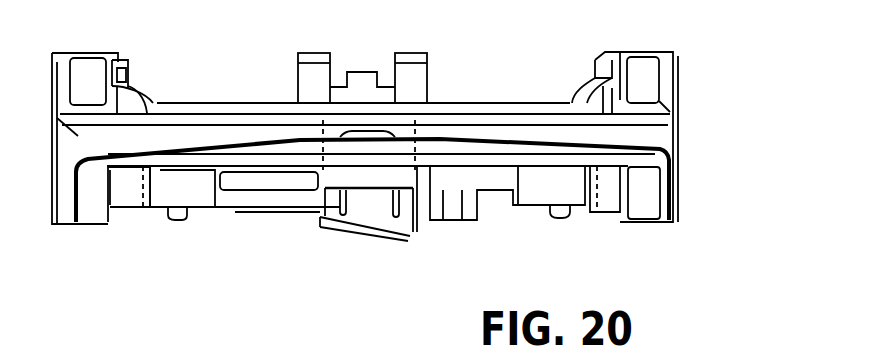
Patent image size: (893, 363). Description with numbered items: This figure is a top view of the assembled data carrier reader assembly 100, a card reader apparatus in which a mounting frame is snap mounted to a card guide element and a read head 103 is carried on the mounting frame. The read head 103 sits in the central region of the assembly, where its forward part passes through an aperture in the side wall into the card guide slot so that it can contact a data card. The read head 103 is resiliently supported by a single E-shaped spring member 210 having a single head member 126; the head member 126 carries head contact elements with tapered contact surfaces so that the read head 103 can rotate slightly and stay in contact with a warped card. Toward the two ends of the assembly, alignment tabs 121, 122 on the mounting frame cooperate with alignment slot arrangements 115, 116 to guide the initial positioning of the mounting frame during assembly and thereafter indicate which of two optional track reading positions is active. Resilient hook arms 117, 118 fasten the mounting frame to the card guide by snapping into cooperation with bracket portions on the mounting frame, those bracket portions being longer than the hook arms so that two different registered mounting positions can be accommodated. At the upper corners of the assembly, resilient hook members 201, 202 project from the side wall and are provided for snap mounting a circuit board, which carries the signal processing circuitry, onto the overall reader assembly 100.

The data carrier reader assembly 100 is at (522, 47).
The resilient hook member 201 is at (128, 62).
The resilient hook member 202 is at (608, 52).
The alignment slot arrangement 116 is at (127, 202).
The alignment tab 122 is at (147, 212).
The resilient hook arm 118 is at (183, 217).
The spring member 210 is at (227, 207).
The read head 103 is at (340, 180).
The head member 126 is at (378, 232).
The resilient hook arm 117 is at (553, 214).
The alignment tab 121 is at (590, 214).
The alignment slot arrangement 115 is at (613, 213).